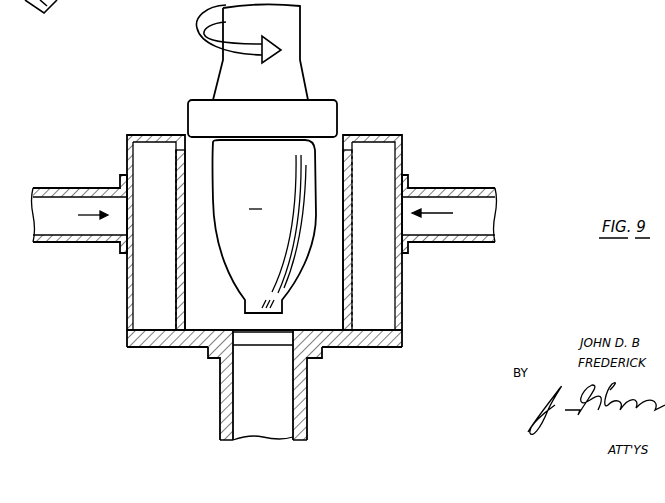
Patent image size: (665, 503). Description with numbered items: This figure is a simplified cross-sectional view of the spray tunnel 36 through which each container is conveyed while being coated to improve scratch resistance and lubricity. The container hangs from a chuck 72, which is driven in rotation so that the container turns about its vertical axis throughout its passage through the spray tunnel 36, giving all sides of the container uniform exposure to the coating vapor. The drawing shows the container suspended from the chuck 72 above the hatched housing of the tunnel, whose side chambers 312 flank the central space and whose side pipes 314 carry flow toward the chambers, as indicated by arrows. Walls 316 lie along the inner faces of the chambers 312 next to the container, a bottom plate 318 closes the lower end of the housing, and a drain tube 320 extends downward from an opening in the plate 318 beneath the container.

The spray tunnel 36 is at (117, 111).
The chuck 72 is at (295, 77).
The housing side chamber blocks 312 is at (142, 165).
The inlet/outlet pipes 314 is at (53, 222).
The perforated screen walls 316 is at (181, 250).
The bottom plate 318 is at (367, 340).
The drain tube 320 is at (300, 417).